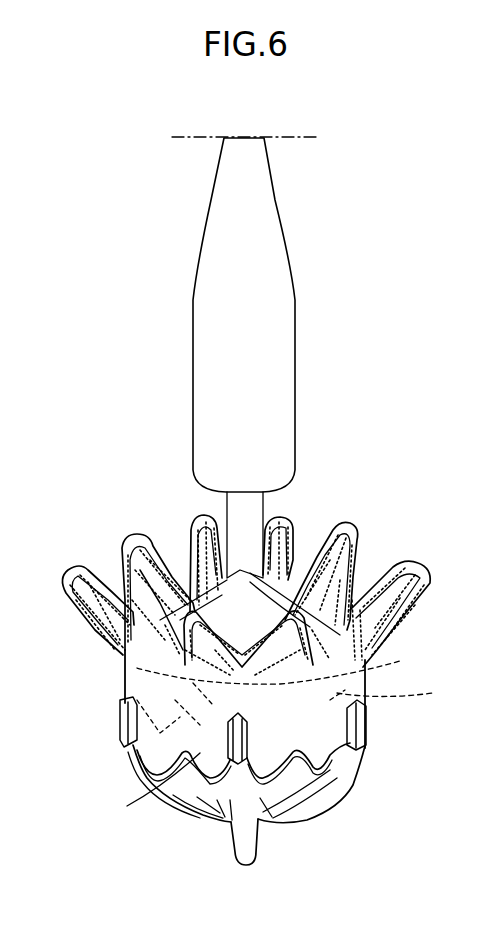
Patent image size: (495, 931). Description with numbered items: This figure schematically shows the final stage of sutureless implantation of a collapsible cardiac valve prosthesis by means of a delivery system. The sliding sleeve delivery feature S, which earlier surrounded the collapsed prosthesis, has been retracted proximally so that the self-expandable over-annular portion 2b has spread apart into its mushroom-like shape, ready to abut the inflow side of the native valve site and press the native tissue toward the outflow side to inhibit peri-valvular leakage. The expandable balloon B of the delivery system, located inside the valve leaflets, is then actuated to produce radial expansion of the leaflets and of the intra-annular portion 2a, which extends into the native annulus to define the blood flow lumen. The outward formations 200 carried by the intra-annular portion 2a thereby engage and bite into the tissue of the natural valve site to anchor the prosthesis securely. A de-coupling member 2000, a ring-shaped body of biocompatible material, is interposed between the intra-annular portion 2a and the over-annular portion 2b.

The sliding sleeve delivery feature S is at (265, 378).
The expandable balloon B is at (258, 803).
The intra-annular portion 2a is at (133, 759).
The over-annular portion 2b is at (393, 563).
The outward formations 200 is at (121, 740).
The de-coupling member 2000 is at (400, 661).